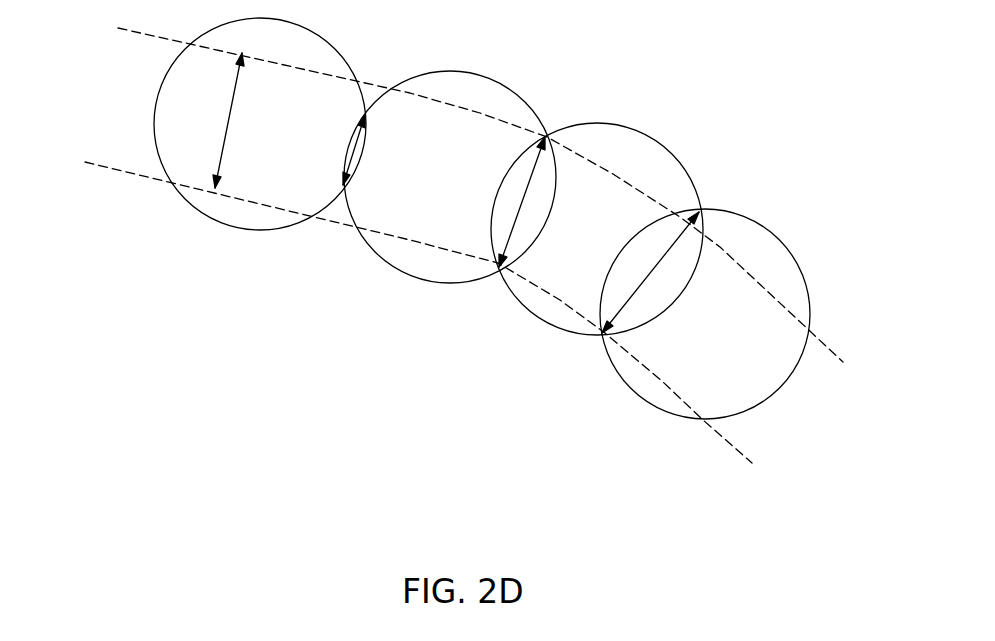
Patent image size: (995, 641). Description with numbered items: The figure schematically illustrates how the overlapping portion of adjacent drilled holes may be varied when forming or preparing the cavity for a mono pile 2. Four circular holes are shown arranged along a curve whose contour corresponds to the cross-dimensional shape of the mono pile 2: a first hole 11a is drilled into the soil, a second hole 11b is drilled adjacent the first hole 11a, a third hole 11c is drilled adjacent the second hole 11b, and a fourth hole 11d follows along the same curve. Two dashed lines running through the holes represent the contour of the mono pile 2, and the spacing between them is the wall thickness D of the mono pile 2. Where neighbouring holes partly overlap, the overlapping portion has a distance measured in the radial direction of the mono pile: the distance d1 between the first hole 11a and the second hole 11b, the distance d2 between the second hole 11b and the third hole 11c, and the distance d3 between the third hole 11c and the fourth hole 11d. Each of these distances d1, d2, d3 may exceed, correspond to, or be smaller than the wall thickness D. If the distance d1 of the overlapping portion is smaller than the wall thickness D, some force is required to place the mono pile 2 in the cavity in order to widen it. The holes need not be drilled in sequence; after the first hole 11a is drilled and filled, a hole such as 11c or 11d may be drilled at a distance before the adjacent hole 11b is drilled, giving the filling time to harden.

The mono pile 2 is at (332, 222).
The first hole 11a is at (178, 158).
The second hole 11b is at (422, 222).
The third hole 11c is at (583, 277).
The fourth hole 11d is at (688, 358).
The wall thickness D is at (240, 120).
The distance of overlapping portion d1 is at (375, 150).
The distance of overlapping portion d2 is at (536, 202).
The distance of overlapping portion d3 is at (651, 272).